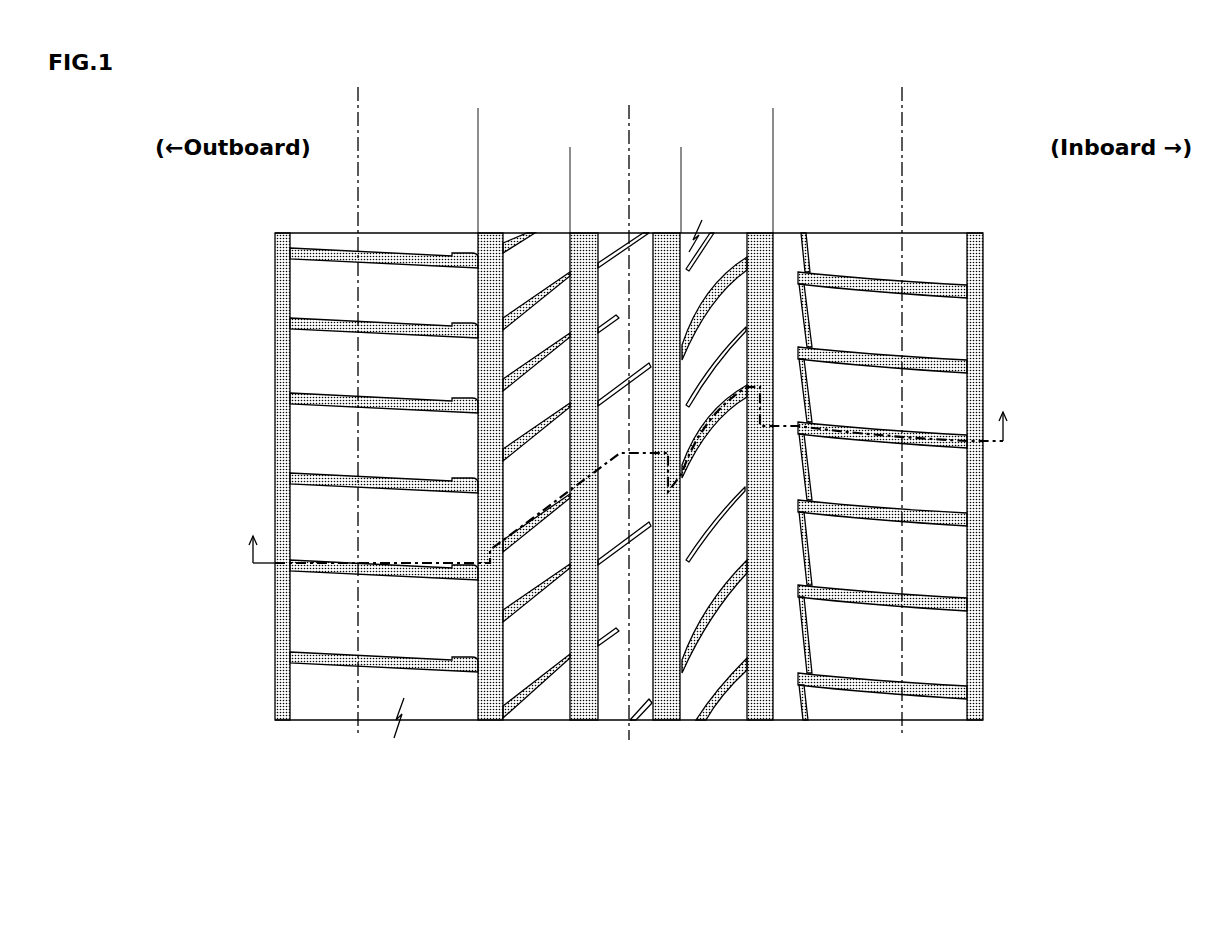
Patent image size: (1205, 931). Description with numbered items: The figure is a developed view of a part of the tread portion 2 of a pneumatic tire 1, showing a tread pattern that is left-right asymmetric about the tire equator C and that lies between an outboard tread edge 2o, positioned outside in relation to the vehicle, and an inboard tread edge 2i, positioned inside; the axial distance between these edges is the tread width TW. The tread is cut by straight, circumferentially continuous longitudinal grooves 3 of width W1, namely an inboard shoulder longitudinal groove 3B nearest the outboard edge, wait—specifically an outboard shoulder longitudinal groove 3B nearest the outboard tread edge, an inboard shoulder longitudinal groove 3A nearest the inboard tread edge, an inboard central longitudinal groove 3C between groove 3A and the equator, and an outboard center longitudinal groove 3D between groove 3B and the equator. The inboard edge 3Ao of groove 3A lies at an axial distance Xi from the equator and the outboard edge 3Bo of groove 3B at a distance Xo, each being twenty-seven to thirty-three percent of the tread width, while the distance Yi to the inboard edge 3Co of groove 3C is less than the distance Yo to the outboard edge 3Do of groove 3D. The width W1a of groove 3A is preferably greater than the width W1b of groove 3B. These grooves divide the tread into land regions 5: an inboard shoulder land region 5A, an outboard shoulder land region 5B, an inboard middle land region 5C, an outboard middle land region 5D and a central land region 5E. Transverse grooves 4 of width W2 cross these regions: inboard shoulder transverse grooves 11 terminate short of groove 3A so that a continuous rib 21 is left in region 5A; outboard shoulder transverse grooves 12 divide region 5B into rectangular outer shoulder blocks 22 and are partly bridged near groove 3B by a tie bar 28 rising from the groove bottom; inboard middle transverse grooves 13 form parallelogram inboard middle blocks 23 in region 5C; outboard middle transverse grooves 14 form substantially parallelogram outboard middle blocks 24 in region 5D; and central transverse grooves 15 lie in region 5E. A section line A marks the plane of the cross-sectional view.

The pneumatic tire 1 is at (659, 402).
The tread portion 2 is at (878, 222).
The outboard tread edge 2o is at (356, 165).
The inboard tread edge 2i is at (905, 162).
The longitudinal grooves 3 is at (627, 524).
The inboard shoulder longitudinal groove 3A is at (760, 506).
The outboard shoulder longitudinal groove 3B is at (498, 677).
The inboard central longitudinal groove 3C is at (672, 677).
The outboard center longitudinal groove 3D is at (585, 677).
The inboard edge of inboard shoulder longitudinal groove 3Ao is at (773, 231).
The outboard edge of outboard shoulder longitudinal groove 3Bo is at (478, 231).
The inboard edge of inboard central longitudinal groove 3Co is at (681, 231).
The outboard edge of outboard center longitudinal groove 3Do is at (570, 231).
The transverse grooves 4 is at (633, 476).
The inboard shoulder transverse grooves 11 is at (857, 598).
The outboard shoulder transverse grooves 12 is at (400, 478).
The inboard middle transverse grooves 13 is at (723, 598).
The outboard middle transverse grooves 14 is at (503, 587).
The central transverse grooves 15 is at (617, 317).
The land regions 5 is at (630, 446).
The inboard shoulder land region 5A is at (846, 272).
The outboard shoulder land region 5B is at (402, 282).
The inboard middle land region 5C is at (732, 282).
The outboard middle land region 5D is at (522, 282).
The central land region 5E is at (612, 282).
The rib 21 is at (867, 393).
The outer shoulder blocks 22 is at (388, 437).
The inboard middle blocks 23 is at (727, 372).
The outboard middle blocks 24 is at (545, 478).
The tie bar 28 is at (470, 328).
The tread width TW is at (902, 92).
The axial distance from tire equator to outboard edge of outboard shoulder longitudi Xo is at (629, 115).
The axial distance from tire equator to inboard edge of inboard shoulder longitudina Xi is at (773, 115).
The axial distance from tire equator to outboard edge of outboard center longitudina Yo is at (629, 154).
The axial distance from tire equator to inboard edge of inboard central longitudinal Yi is at (681, 154).
The width of longitudinal grooves W1 is at (637, 728).
The width of inboard shoulder longitudinal groove W1a is at (799, 644).
The width of outboard shoulder longitudinal groove W1b is at (530, 644).
The width of transverse grooves W2 is at (843, 545).
The tire equator C is at (629, 431).
The section line A- A is at (631, 475).